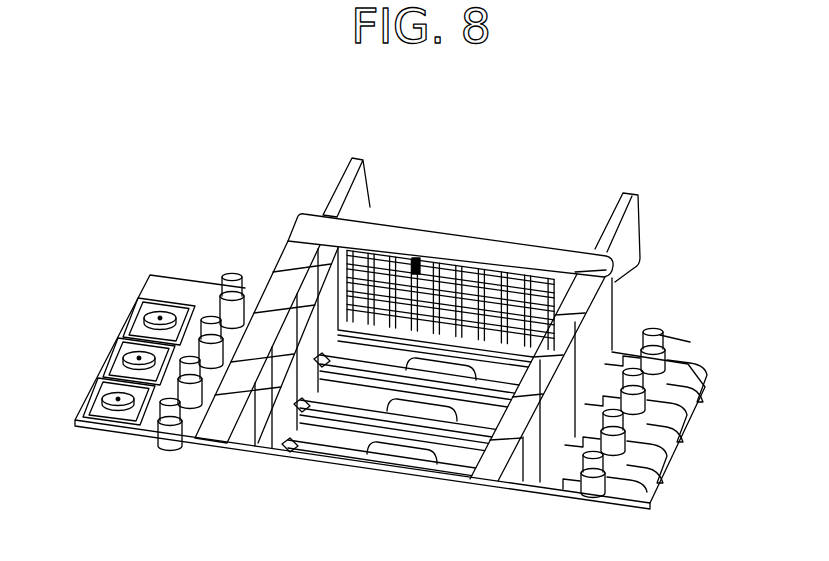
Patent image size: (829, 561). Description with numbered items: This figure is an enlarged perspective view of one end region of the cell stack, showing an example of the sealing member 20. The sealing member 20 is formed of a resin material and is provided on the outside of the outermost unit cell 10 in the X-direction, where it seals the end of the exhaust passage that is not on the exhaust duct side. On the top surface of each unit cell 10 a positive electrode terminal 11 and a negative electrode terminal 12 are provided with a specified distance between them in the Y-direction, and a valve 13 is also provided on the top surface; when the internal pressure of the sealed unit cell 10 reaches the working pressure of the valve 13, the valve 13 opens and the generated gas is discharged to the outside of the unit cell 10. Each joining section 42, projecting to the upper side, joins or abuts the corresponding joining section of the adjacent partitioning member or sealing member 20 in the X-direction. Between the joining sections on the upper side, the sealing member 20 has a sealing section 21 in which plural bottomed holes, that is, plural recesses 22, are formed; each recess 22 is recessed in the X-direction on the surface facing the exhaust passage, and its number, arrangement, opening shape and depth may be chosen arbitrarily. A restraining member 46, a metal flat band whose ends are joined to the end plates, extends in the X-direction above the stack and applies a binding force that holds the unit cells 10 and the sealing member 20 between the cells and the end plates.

The unit cell 10 is at (358, 402).
The positive electrode terminal 11 is at (215, 311).
The negative electrode terminal 12 is at (232, 275).
The valve 13 is at (418, 410).
The sealing member 20 is at (450, 257).
The sealing section 21 is at (413, 262).
The recess 22 is at (510, 293).
The joining section 42 is at (221, 422).
The restraining member 46 is at (364, 203).